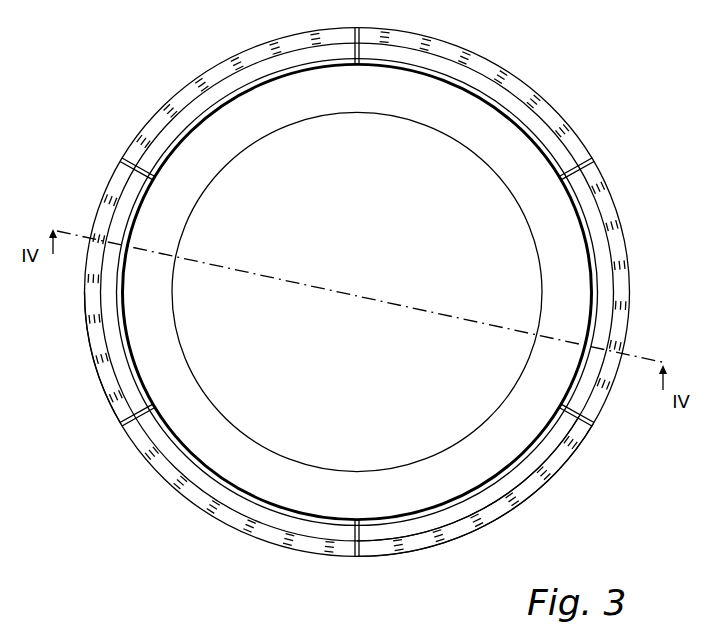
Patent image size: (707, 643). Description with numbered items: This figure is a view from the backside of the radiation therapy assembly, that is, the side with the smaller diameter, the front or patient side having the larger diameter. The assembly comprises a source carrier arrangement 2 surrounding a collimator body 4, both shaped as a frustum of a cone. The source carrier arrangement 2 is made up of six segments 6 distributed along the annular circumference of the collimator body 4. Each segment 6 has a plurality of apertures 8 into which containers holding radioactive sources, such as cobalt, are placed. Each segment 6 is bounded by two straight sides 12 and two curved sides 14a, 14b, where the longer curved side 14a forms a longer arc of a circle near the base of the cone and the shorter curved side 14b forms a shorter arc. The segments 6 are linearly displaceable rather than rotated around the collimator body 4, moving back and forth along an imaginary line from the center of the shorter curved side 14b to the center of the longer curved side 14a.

The source carrier arrangement 2 is at (127, 438).
The collimator body 4 is at (140, 325).
The segment 6 is at (223, 70).
The aperture 8 is at (238, 530).
The straight side 12 is at (355, 558).
The longer curved side 14a is at (523, 503).
The shorter curved side 14b is at (542, 455).